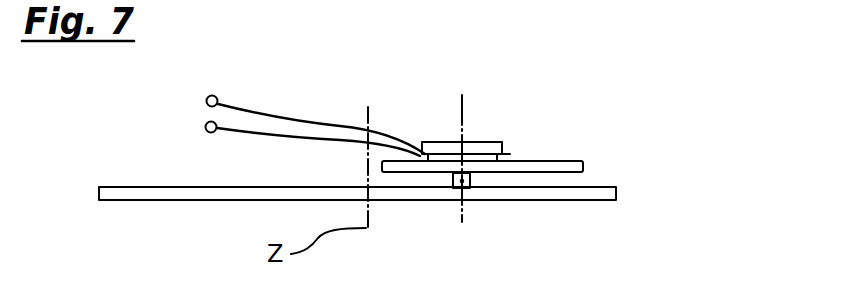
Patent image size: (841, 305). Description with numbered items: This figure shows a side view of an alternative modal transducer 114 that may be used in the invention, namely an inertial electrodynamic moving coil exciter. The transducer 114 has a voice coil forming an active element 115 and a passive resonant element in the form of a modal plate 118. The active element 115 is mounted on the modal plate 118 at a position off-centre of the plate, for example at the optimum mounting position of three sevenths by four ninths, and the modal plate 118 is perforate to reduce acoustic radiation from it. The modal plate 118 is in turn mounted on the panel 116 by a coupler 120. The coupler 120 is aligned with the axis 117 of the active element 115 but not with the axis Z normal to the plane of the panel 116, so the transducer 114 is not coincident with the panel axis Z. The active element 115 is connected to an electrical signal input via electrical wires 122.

The transducer 114 is at (584, 93).
The active element 115 is at (435, 141).
The panel 116 is at (172, 200).
The axis 117 is at (462, 96).
The modal plate 118 is at (584, 164).
The coupler 120 is at (470, 178).
The electrical wires 122 is at (317, 137).